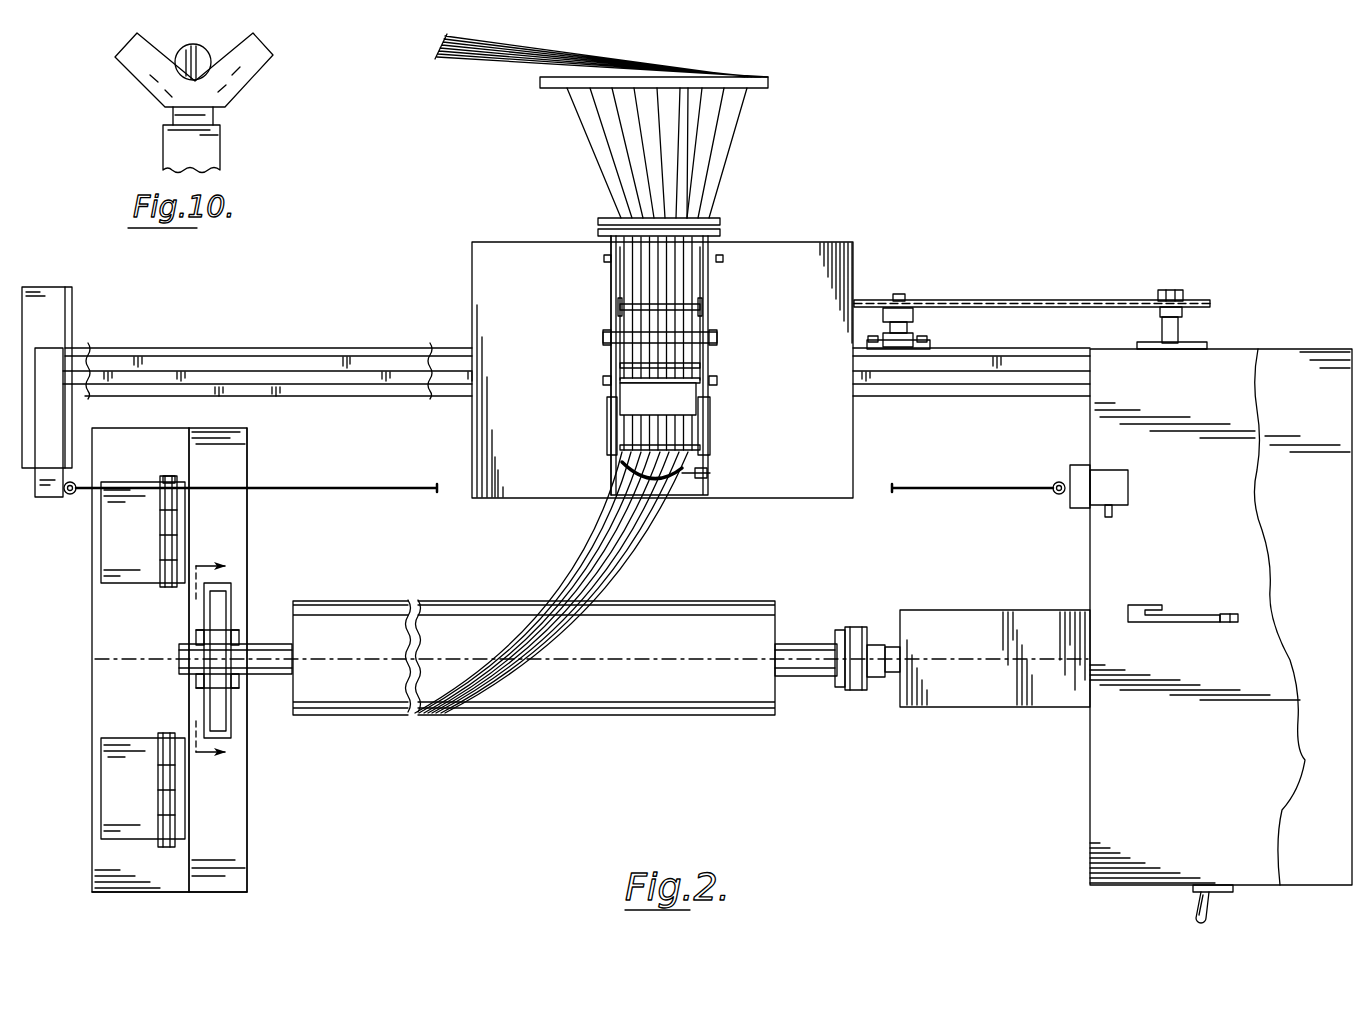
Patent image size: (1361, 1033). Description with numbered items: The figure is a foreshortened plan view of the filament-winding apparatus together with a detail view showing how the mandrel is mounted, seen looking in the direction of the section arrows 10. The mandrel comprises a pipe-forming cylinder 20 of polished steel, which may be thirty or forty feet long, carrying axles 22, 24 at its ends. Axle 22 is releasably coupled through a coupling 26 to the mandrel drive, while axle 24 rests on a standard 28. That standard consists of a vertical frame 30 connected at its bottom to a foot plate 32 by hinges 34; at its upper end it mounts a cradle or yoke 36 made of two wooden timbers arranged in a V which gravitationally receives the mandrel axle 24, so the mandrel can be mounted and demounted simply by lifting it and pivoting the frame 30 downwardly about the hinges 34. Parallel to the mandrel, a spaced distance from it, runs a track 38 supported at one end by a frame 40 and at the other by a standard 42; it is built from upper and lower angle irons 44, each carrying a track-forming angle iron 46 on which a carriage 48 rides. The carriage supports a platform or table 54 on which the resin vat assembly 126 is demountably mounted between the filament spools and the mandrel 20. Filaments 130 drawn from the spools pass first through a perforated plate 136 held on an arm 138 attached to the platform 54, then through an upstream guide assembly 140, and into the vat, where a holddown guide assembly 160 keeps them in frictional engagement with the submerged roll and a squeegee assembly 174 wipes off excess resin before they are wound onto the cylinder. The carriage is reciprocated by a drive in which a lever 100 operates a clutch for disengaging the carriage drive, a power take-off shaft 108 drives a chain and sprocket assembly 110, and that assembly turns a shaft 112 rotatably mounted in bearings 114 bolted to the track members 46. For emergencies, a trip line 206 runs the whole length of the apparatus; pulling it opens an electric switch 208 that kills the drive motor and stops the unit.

In FIG. 2, the section line of Fig. 10 is at (210, 668).
In FIG. 2, the pipe-forming cylinder 20 is at (448, 612).
In FIG. 2, the axle 22 is at (805, 653).
In FIG. 10, the axle 24 is at (198, 52).
In FIG. 2, the axle 24 is at (280, 655).
In FIG. 2, the coupling 26 is at (857, 633).
In FIG. 2, the standard 28 is at (262, 834).
In FIG. 10, the vertical frame 30 is at (173, 145).
In FIG. 2, the vertical frame 30 is at (237, 800).
In FIG. 2, the foot plate 32 is at (100, 641).
In FIG. 2, the hinges 34 is at (152, 578).
In FIG. 10, the cradle or yoke 36 is at (237, 78).
In FIG. 2, the cradle or yoke 36 is at (228, 710).
In FIG. 2, the track 38 is at (228, 333).
In FIG. 2, the frame 40 is at (1243, 349).
In FIG. 2, the standard 42 is at (42, 487).
In FIG. 2, the angle irons 44 is at (333, 396).
In FIG. 2, the track-forming angle iron 46 is at (405, 378).
In FIG. 2, the carriage 48 is at (703, 518).
In FIG. 2, the platform or table 54 is at (528, 260).
In FIG. 2, the lever 100 is at (1217, 622).
In FIG. 2, the power take-off shaft 108 is at (1170, 330).
In FIG. 2, the chain and sprocket assembly 110 is at (1208, 302).
In FIG. 2, the shaft 112 is at (905, 297).
In FIG. 2, the bearings 114 is at (898, 333).
In FIG. 2, the resin vat assembly 126 is at (768, 262).
In FIG. 2, the filaments 130 is at (470, 66).
In FIG. 2, the perforated plate 136 is at (768, 82).
In FIG. 2, the arm 138 is at (687, 143).
In FIG. 2, the upstream guide assembly 140 is at (738, 200).
In FIG. 2, the holddown guide assembly 160 is at (728, 325).
In FIG. 2, the squeegee assembly 174 is at (678, 410).
In FIG. 2, the trip line 206 is at (363, 490).
In FIG. 2, the electric switch 208 is at (1078, 497).